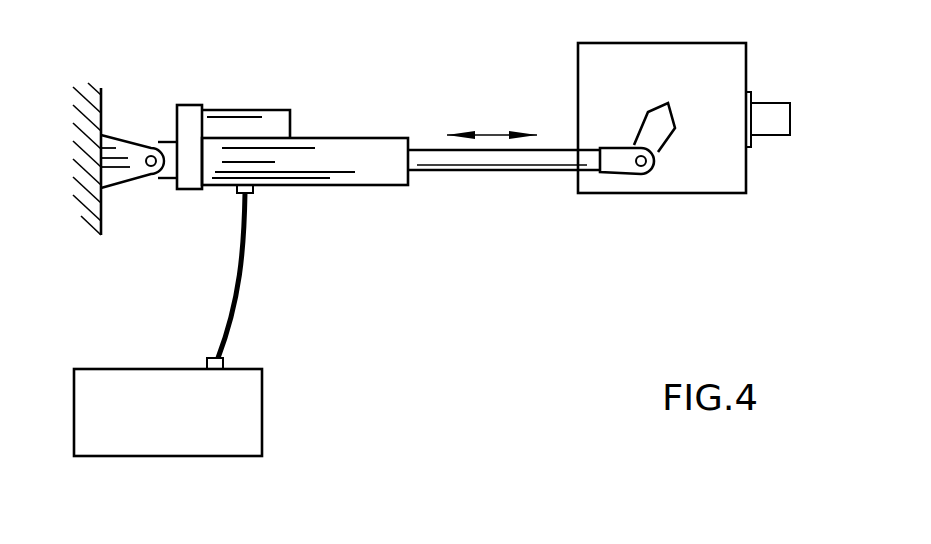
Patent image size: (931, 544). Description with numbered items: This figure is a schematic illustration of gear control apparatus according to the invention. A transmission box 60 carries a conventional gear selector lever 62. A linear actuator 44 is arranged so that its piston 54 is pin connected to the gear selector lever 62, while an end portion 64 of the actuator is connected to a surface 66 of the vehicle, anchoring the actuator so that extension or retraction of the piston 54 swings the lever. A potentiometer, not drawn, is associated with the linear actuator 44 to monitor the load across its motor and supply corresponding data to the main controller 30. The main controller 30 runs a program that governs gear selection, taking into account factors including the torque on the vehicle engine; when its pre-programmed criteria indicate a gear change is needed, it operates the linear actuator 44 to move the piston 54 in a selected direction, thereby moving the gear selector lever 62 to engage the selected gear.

The main controller 30 is at (263, 390).
The linear actuator 44 is at (333, 148).
The piston 54 is at (473, 165).
The transmission box 60 is at (746, 60).
The gear selector lever 62 is at (672, 133).
The end portion 64 is at (140, 113).
The surface 66 is at (100, 202).